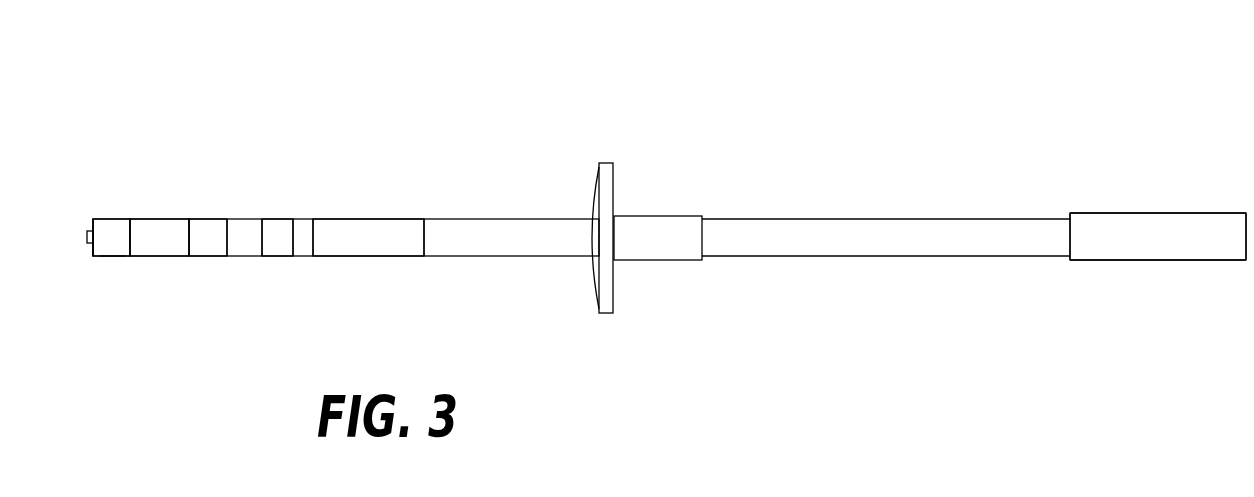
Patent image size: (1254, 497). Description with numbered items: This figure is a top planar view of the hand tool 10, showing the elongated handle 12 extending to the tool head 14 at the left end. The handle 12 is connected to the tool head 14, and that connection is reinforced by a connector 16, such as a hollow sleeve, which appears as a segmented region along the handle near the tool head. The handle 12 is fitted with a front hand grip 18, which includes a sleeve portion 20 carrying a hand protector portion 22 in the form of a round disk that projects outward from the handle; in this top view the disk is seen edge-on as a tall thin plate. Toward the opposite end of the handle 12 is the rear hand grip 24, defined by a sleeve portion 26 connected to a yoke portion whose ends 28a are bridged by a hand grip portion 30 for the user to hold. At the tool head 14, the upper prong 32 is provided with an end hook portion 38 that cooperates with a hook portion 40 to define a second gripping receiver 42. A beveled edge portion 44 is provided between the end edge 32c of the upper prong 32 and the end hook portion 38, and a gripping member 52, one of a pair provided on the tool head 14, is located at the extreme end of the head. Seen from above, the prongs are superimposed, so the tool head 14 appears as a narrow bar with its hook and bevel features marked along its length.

The hand tool 10 is at (133, 104).
The handle 12 is at (813, 206).
The tool head 14 is at (177, 270).
The connector 16 is at (359, 208).
The front hand grip 18 is at (660, 276).
The sleeve portion 20 is at (665, 225).
The hand protector portion 22 is at (608, 170).
The rear hand grip 24 is at (1137, 277).
The sleeve portion 26 is at (1125, 225).
The ends of the yoke portion 28a is at (1222, 260).
The hand grip portion 30 is at (1235, 213).
The upper prong 32 is at (108, 258).
The end edge 32c is at (92, 254).
The end hook portion 38 is at (158, 218).
The hook portion 40 is at (268, 220).
The second gripping receiver 42 is at (207, 233).
The beveled edge portion 44 is at (125, 227).
The gripping member 52 is at (87, 237).